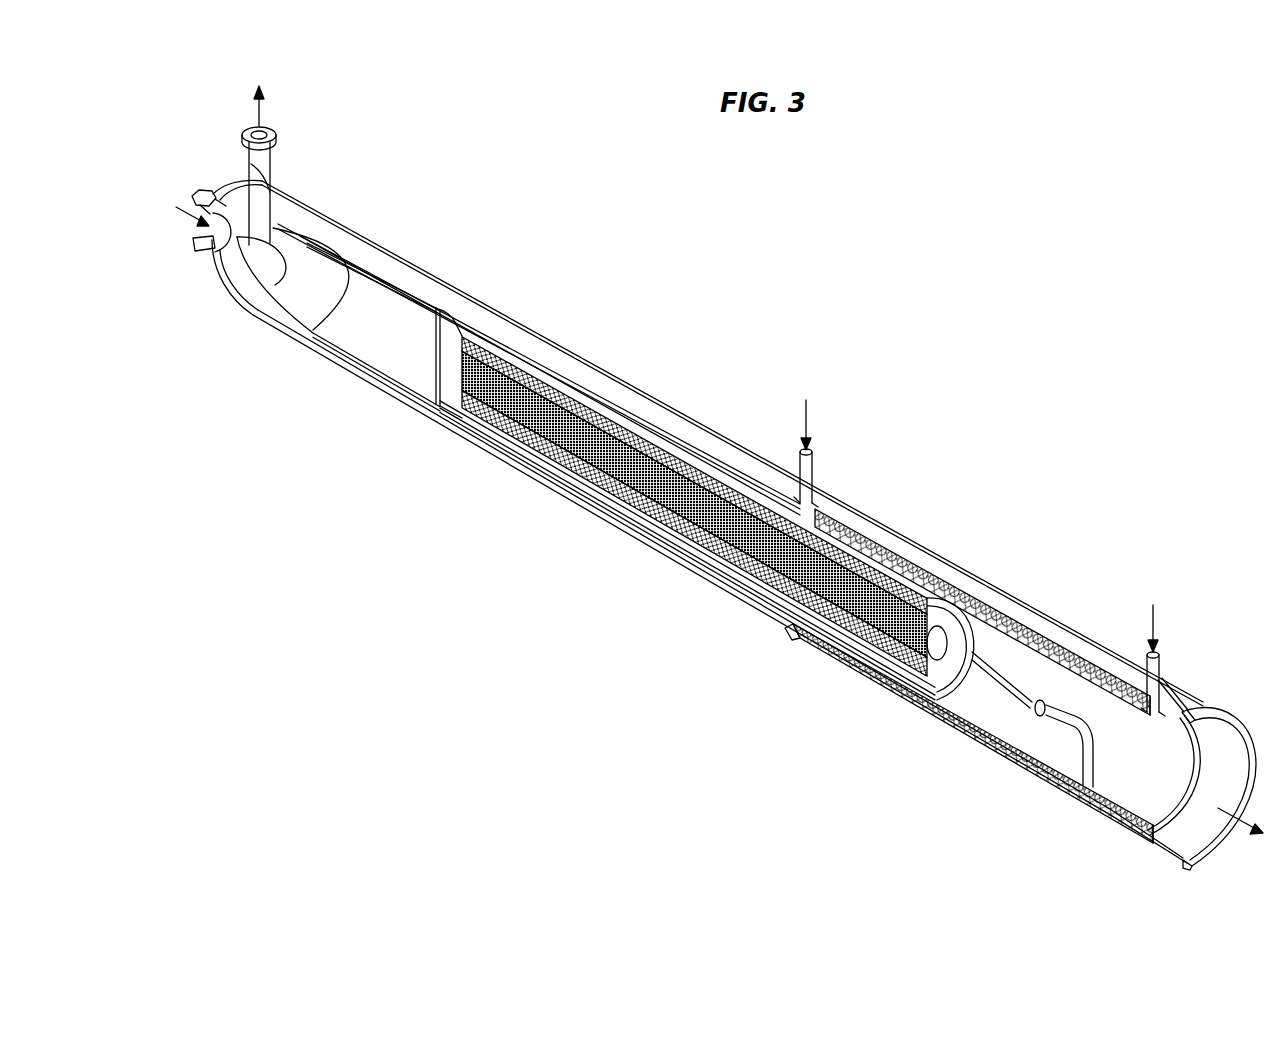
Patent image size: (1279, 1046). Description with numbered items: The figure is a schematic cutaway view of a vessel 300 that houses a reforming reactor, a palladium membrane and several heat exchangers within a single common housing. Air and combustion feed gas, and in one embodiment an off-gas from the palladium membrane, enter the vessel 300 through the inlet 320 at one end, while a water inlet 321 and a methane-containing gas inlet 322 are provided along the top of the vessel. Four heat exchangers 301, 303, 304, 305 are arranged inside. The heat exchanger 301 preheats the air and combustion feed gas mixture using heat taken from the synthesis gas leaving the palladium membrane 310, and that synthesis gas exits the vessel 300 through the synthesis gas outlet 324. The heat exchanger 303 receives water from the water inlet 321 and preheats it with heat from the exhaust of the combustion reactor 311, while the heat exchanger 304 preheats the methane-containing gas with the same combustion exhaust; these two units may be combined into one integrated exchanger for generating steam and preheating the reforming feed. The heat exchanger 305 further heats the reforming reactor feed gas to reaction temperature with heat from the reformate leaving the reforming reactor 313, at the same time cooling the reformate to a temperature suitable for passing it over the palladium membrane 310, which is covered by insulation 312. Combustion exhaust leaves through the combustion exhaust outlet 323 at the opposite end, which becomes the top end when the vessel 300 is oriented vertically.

The vessel 300 is at (692, 348).
The heat exchanger 301 is at (368, 380).
The heat exchanger 303 is at (977, 740).
The heat exchanger 304 is at (1120, 820).
The heat exchanger 305 is at (860, 670).
The palladium membrane 310 is at (735, 543).
The combustion reactor 311 is at (600, 510).
The insulation 312 is at (550, 457).
The reforming reactor 313 is at (670, 525).
The inlet 320 is at (195, 222).
The water inlet 321 is at (812, 465).
The methane-containing gas inlet 322 is at (1163, 663).
The combustion exhaust outlet 323 is at (1242, 833).
The synthesis gas outlet 324 is at (277, 160).